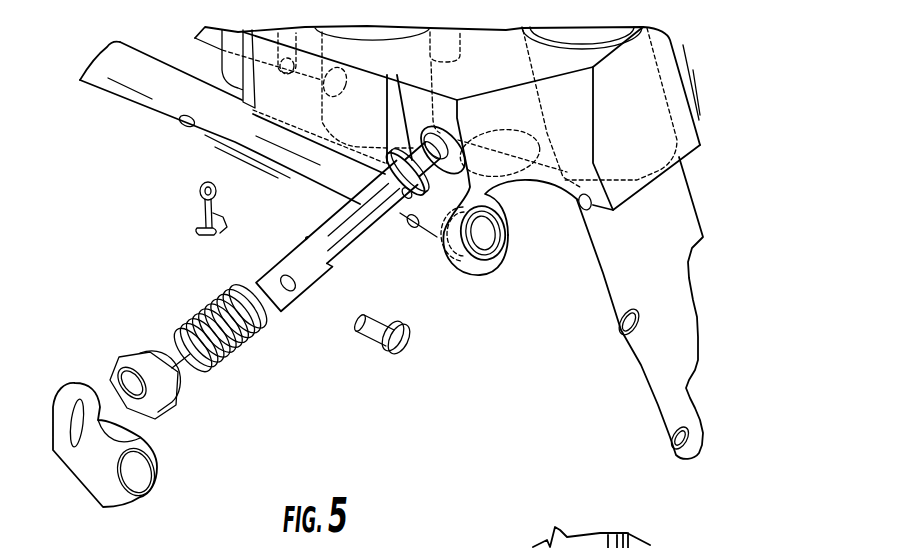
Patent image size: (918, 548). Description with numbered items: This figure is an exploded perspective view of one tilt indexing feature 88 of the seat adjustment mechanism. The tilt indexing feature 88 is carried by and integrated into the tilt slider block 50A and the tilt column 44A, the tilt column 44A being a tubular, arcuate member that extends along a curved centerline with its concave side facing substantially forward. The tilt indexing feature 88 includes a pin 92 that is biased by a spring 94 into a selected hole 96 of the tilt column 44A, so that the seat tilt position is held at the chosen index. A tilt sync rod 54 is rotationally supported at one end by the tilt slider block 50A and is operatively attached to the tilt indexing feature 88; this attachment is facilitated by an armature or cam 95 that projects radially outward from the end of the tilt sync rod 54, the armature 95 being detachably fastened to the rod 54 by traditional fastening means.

The tilt sync rod 54 is at (152, 100).
The tilt slider block 50A is at (689, 137).
The tilt column 44A is at (679, 223).
The hole 96 is at (581, 200).
The pin 92 is at (333, 222).
The spring 94 is at (205, 308).
The armature or cam 95 is at (62, 466).
The tilt indexing feature 88 is at (332, 438).